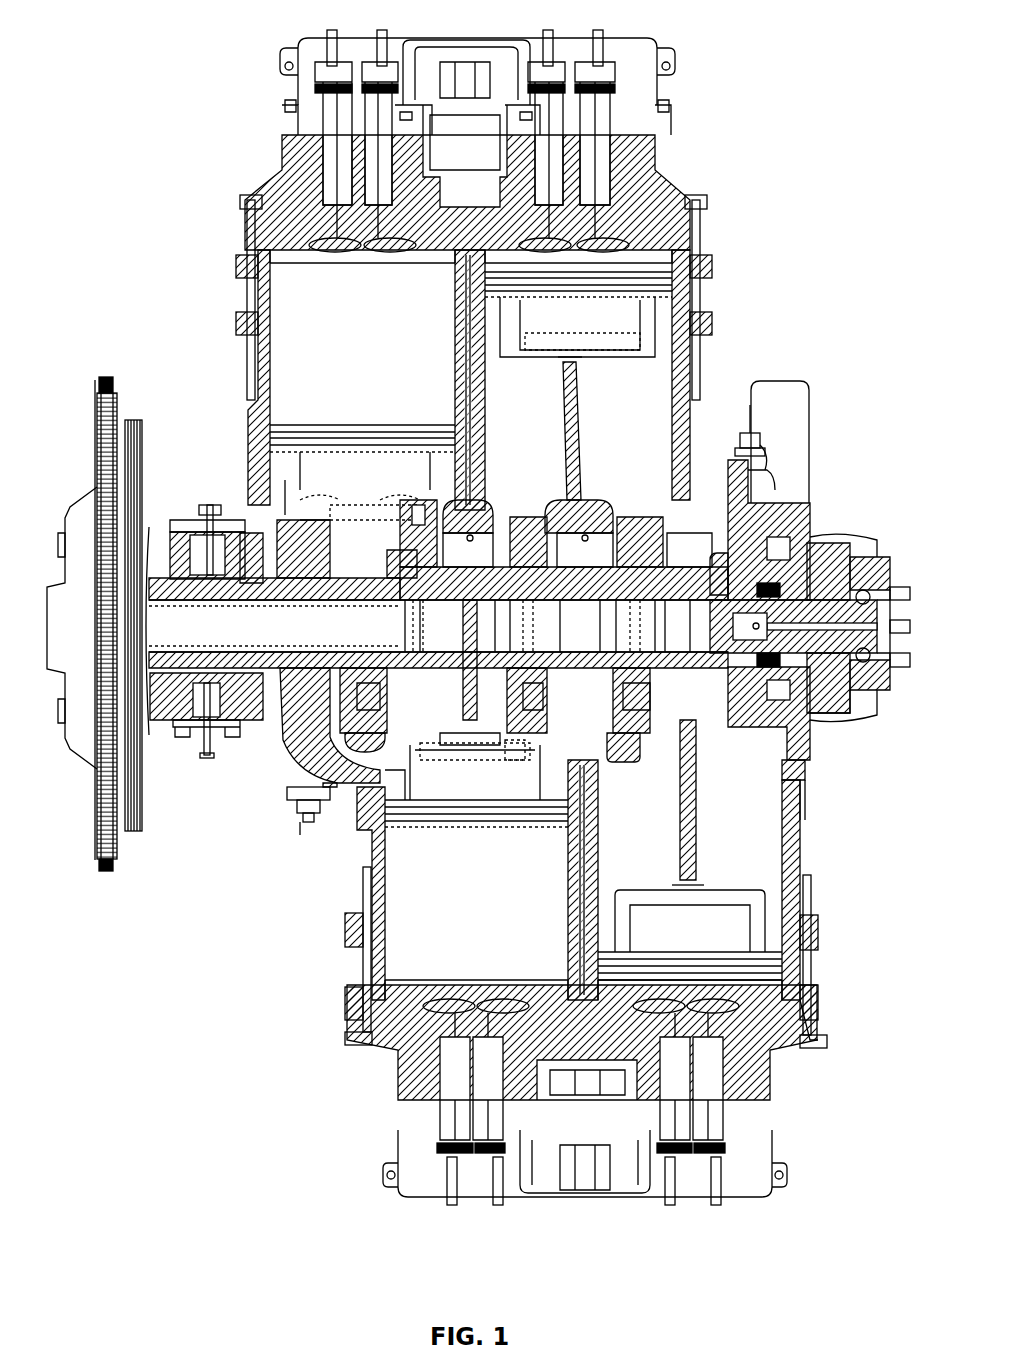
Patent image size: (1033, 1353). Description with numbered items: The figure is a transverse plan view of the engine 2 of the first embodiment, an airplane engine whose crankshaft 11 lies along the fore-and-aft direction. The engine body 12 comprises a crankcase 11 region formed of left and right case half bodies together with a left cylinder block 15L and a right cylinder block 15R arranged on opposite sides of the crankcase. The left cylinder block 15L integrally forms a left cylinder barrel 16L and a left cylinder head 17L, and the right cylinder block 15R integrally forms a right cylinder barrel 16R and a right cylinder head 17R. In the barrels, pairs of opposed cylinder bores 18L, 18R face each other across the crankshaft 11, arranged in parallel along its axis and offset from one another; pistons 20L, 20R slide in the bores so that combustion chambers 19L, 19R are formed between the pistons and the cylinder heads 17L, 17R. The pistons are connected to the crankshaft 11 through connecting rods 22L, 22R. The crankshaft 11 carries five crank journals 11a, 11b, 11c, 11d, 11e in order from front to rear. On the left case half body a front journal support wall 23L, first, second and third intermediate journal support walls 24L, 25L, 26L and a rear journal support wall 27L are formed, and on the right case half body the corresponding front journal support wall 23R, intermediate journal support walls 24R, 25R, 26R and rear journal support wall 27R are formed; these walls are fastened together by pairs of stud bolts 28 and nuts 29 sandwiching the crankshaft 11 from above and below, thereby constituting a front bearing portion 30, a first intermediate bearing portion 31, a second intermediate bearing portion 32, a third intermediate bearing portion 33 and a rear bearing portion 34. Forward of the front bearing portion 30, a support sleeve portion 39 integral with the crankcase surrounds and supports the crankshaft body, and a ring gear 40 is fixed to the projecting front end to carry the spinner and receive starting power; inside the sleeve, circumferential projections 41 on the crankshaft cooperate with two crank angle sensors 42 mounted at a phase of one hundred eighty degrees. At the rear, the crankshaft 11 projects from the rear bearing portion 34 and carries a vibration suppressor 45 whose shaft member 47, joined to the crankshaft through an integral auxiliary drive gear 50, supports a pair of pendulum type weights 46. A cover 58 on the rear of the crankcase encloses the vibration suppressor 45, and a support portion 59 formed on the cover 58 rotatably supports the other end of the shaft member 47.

The engine 2 is at (573, 0).
The crankshaft 11 is at (300, 700).
The crank journal 11a is at (183, 631).
The crank journal 11b is at (407, 755).
The crank journal 11c is at (410, 510).
The crank journal 11d is at (686, 592).
The crank journal 11e is at (760, 565).
The engine body 12 is at (822, 963).
The right cylinder block 15R is at (126, 170).
The left cylinder block 15L is at (247, 1012).
The right cylinder barrel 16R is at (240, 268).
The left cylinder barrel 16L is at (348, 958).
The right cylinder head 17R is at (282, 169).
The left cylinder head 17L is at (385, 1087).
The cylinder bore 18R is at (262, 395).
The cylinder bore 18L is at (392, 900).
The combustion chamber 19R is at (395, 368).
The combustion chamber 19L is at (498, 903).
The piston 20R is at (262, 440).
The piston 20L is at (455, 825).
The connecting rod 22R is at (579, 432).
The connecting rod 22L is at (480, 632).
The front journal support wall 23R is at (330, 520).
The front journal support wall 23L is at (290, 775).
The first intermediate journal support wall 24R is at (390, 518).
The first intermediate journal support wall 24L is at (475, 769).
The second intermediate journal support wall 25R is at (559, 497).
The second intermediate journal support wall 25L is at (506, 752).
The third intermediate journal support wall 26R is at (668, 525).
The third intermediate journal support wall 26L is at (635, 738).
The rear journal support wall 27R is at (767, 506).
The rear journal support wall 27L is at (735, 722).
The stud bolt 28 is at (748, 440).
The nut 29 is at (766, 447).
The front bearing portion 30 is at (288, 500).
The first intermediate bearing portion 31 is at (438, 498).
The second intermediate bearing portion 32 is at (515, 762).
The third intermediate bearing portion 33 is at (438, 626).
The rear bearing portion 34 is at (805, 818).
The support sleeve portion 39 is at (160, 742).
The ring gear 40 is at (108, 872).
The projection 41 is at (195, 522).
The crank angle sensor 42 is at (211, 508).
The vibration suppressor 45 is at (852, 543).
The vibration pendulum type weight 46 is at (860, 539).
The shaft member 47 is at (148, 548).
The auxiliary drive gear 50 is at (800, 750).
The cover 58 is at (848, 722).
The support portion 59 is at (895, 672).